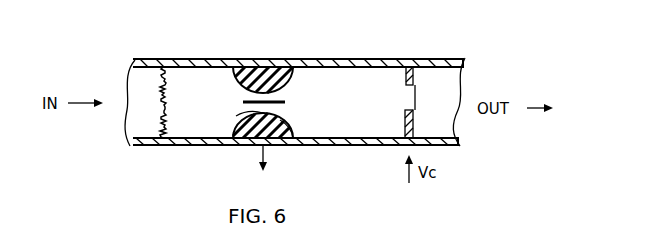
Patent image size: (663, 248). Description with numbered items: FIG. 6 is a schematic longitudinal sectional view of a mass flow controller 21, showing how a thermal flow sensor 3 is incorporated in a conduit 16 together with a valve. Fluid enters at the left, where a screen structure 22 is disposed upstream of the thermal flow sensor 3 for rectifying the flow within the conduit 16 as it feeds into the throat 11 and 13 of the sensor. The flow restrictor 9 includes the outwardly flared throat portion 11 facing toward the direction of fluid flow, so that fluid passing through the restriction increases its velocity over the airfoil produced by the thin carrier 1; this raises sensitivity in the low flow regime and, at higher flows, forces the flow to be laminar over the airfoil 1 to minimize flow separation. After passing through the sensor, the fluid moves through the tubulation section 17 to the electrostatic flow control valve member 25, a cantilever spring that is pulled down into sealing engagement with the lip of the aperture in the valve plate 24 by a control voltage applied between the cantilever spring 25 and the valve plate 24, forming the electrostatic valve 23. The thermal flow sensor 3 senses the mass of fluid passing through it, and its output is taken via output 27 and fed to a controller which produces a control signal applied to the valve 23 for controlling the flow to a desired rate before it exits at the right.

The thin carrier 1 is at (276, 100).
The thermal flow sensor 3 is at (293, 117).
The flow restrictor 9 is at (296, 128).
The throat portion 11 is at (233, 114).
The throat 13 is at (240, 78).
The conduit 16 is at (136, 63).
The tubulation section 17 is at (340, 58).
The mass flow controller 21 is at (318, 55).
The screen structure 22 is at (142, 120).
The electrostatic valve 23 is at (392, 115).
The valve plate 24 is at (405, 75).
The electrostatic flow control valve member 25 is at (417, 90).
The output 27 is at (258, 158).